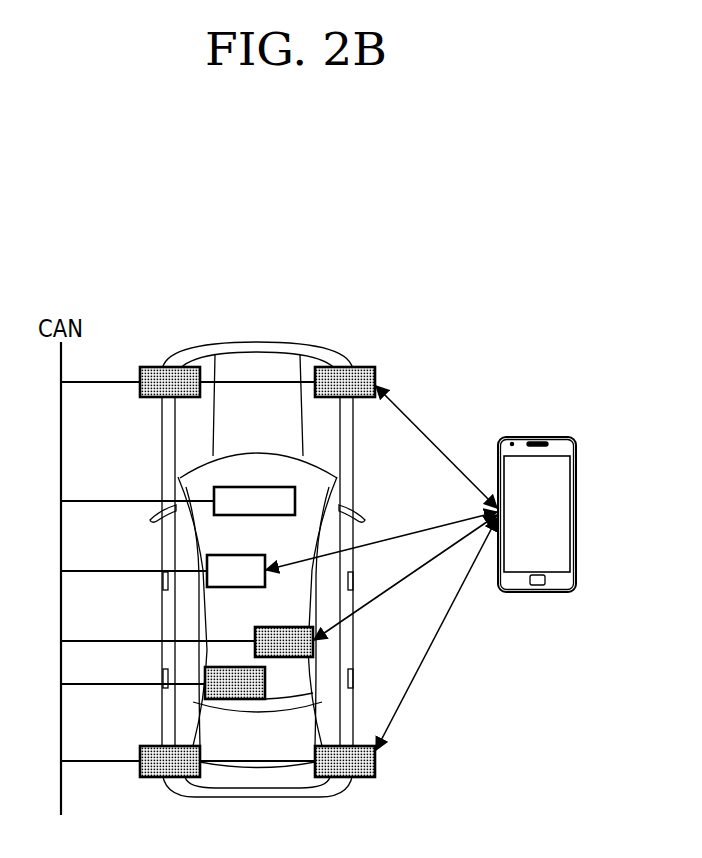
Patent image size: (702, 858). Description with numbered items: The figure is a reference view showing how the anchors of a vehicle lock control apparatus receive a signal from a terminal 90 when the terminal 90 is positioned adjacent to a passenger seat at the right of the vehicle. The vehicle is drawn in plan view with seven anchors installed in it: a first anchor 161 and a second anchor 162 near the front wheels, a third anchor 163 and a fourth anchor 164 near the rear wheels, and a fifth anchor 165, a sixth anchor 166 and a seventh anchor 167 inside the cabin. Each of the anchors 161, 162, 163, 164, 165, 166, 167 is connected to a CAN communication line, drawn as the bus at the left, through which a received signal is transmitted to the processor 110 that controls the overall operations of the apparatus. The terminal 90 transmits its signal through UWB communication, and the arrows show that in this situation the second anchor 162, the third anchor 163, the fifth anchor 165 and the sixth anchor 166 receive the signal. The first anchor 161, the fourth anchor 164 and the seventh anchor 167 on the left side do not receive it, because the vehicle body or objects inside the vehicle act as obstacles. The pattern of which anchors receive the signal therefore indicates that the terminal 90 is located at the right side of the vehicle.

The terminal 90 is at (537, 437).
The processor 110 is at (253, 487).
The first anchor 161 is at (158, 367).
The second anchor 162 is at (351, 367).
The third anchor 163 is at (362, 778).
The fourth anchor 164 is at (158, 778).
The fifth anchor 165 is at (228, 588).
The sixth anchor 166 is at (313, 650).
The seventh anchor 167 is at (205, 681).